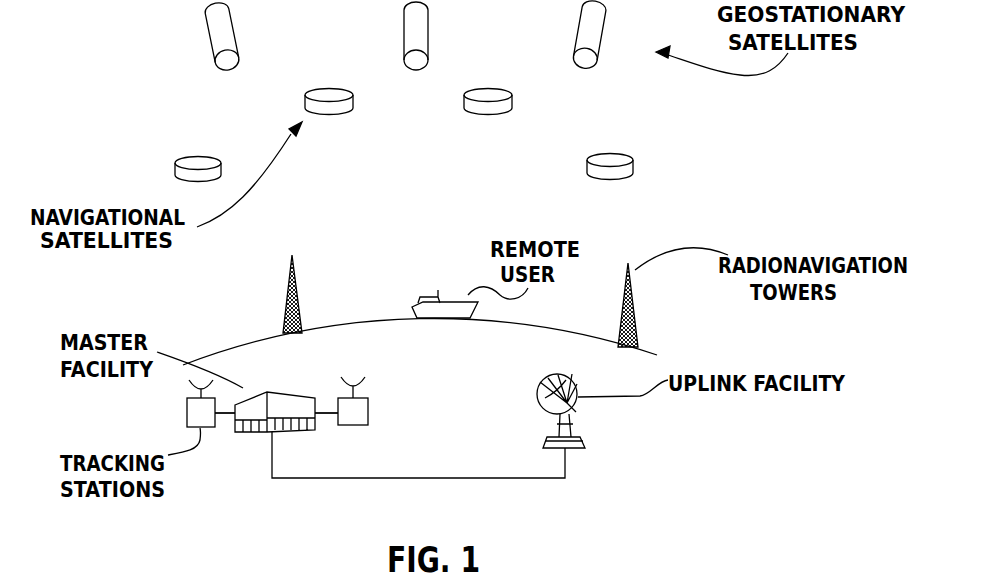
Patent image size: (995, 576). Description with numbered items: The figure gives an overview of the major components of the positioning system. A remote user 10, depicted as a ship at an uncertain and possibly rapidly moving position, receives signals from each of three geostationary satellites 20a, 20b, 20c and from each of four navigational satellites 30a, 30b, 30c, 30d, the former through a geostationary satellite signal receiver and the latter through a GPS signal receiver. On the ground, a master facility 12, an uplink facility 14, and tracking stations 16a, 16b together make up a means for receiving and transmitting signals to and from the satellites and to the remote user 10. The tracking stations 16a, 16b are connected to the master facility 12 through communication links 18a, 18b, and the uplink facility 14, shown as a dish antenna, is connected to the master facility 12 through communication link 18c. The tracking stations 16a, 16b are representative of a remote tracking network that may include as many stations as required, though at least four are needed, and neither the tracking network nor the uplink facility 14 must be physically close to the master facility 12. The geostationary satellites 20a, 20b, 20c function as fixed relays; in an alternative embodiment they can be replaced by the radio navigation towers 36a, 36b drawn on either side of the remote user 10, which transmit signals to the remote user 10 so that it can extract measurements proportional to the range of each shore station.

The remote user 10 is at (438, 318).
The master facility 12 is at (293, 400).
The uplink facility 14 is at (585, 440).
The tracking station 16a is at (187, 411).
The tracking station 16b is at (368, 412).
The communication link 18a is at (221, 414).
The communication link 18b is at (327, 414).
The communication link 18c is at (437, 479).
The geostationary satellite 20a is at (232, 50).
The geostationary satellite 20b is at (418, 35).
The geostationary satellite 20c is at (588, 33).
The navigational satellite 30a is at (199, 160).
The navigational satellite 30b is at (337, 113).
The navigational satellite 30c is at (497, 108).
The navigational satellite 30d is at (614, 158).
The radio navigation tower 36a is at (288, 311).
The radio navigation tower 36b is at (673, 302).